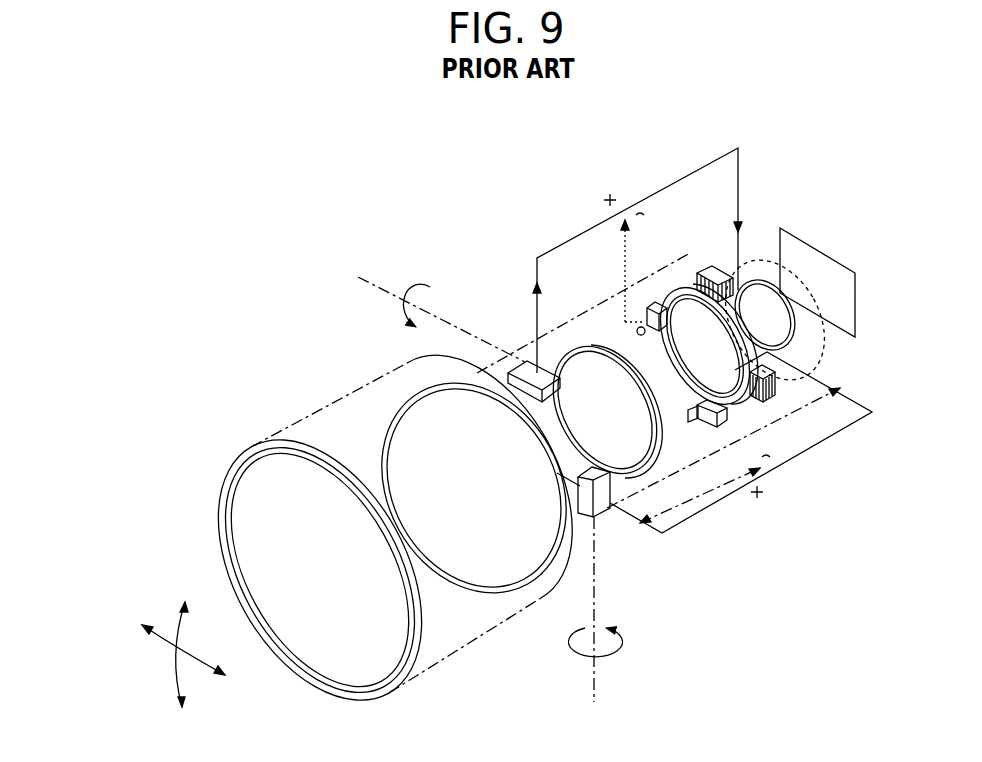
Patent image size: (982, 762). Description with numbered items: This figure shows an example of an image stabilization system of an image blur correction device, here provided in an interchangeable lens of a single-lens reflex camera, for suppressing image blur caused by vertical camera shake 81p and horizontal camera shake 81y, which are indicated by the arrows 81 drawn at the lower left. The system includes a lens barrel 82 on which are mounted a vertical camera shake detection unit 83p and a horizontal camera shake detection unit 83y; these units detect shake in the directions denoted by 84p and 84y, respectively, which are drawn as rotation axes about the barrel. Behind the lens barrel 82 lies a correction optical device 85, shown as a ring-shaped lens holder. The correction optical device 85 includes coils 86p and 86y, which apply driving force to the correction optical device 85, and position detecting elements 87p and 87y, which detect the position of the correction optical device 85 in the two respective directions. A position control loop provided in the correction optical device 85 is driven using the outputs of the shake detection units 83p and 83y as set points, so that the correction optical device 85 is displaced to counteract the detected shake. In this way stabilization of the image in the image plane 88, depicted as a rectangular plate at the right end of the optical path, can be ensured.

The arrows 81 is at (155, 664).
The vertical camera shake 81p is at (175, 675).
The horizontal camera shake 81y is at (205, 672).
The lens barrel 82 is at (467, 653).
The vertical camera shake detection unit 83p is at (525, 360).
The horizontal camera shake detection unit 83y is at (600, 496).
The vertical shake detection direction 84p is at (393, 292).
The horizontal shake detection direction 84y is at (600, 667).
The correction optical device 85 is at (681, 263).
The coil 86p is at (713, 277).
The coil 86y is at (778, 385).
The position detecting element 87p is at (636, 331).
The position detecting element 87y is at (710, 433).
The image plane 88 is at (825, 250).